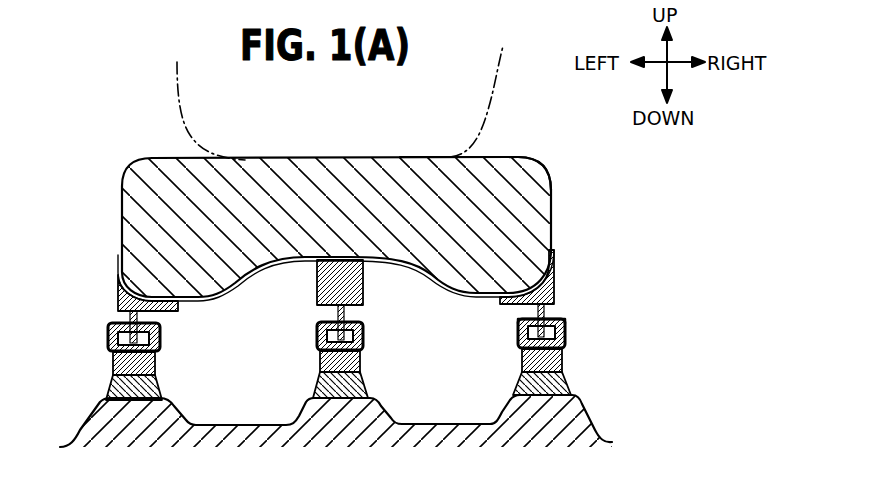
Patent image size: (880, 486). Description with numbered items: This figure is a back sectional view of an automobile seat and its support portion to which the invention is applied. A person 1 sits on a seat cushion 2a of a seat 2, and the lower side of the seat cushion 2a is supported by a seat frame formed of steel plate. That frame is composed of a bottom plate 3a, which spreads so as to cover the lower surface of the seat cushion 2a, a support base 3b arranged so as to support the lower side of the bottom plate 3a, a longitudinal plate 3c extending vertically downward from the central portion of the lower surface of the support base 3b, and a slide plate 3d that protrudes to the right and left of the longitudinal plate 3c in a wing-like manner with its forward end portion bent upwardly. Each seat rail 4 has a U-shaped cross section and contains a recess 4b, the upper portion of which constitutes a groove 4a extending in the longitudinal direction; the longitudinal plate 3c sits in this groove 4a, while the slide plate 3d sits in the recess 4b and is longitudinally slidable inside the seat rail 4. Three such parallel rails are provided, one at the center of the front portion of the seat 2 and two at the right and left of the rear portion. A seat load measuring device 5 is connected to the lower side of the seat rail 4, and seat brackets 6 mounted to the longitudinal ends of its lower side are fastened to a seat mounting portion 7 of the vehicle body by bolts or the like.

The person 1 is at (503, 50).
The seat 2 is at (488, 157).
The seat cushion 2a is at (527, 172).
The bottom plate 3a is at (557, 256).
The support base 3b is at (557, 280).
The longitudinal plate 3c is at (555, 305).
The slide plate 3d is at (566, 321).
The seat rail 4 is at (518, 328).
The groove 4a is at (565, 345).
The recess 4b is at (522, 348).
The seat load measuring device 5 is at (658, 205).
The seat bracket 6 is at (570, 377).
The seat mounting portion 7 is at (598, 441).